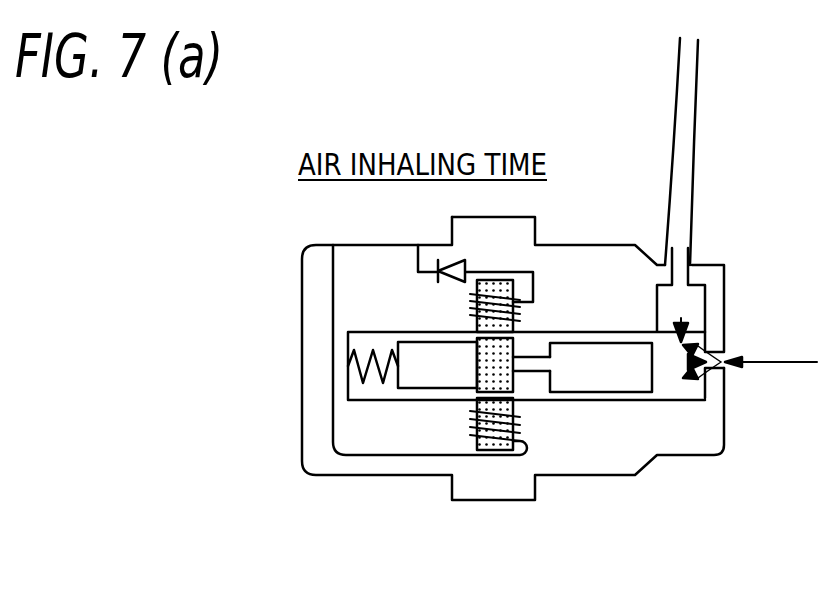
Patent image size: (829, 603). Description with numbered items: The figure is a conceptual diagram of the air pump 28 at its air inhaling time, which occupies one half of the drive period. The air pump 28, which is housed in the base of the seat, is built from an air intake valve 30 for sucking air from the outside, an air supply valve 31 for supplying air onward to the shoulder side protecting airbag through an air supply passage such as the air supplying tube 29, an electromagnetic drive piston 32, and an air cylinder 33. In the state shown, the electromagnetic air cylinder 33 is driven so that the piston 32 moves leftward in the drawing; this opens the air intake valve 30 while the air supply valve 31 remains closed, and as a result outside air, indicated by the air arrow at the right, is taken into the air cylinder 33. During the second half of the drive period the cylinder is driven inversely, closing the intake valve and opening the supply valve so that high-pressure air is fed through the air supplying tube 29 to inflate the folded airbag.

The air pump 28 is at (272, 351).
The air supplying tube 29 is at (688, 100).
The air intake valve 30 is at (686, 366).
The air supply valve 31 is at (682, 323).
The electromagnetic drive piston 32 is at (590, 372).
The air cylinder 33 is at (575, 329).